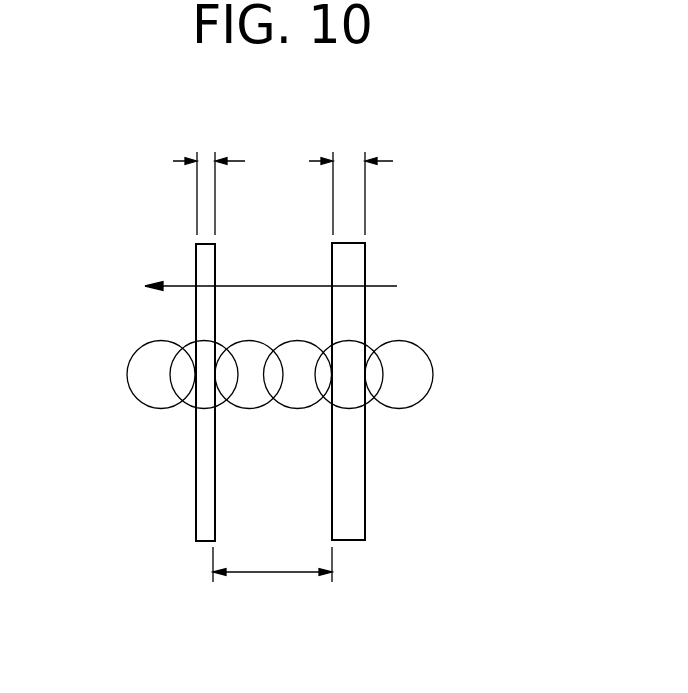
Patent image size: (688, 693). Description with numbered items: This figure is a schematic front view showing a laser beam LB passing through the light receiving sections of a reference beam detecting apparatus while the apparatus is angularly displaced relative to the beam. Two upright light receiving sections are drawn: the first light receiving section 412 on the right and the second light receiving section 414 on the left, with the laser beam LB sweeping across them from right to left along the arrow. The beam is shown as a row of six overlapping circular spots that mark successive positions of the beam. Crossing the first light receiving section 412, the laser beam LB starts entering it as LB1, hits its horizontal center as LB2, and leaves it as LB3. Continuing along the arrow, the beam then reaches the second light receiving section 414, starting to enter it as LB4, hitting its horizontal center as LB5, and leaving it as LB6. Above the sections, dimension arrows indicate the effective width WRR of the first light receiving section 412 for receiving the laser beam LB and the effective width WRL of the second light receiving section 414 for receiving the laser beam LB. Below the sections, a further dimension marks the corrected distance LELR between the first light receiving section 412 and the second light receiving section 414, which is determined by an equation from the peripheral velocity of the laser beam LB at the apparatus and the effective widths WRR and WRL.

The second light receiving section 414 is at (197, 275).
The first light receiving section 412 is at (352, 257).
The laser beam LB is at (272, 285).
The laser beam position entering first light receiving section LB1 is at (425, 396).
The laser beam position at horizontal center of first light receiving section LB2 is at (352, 409).
The laser beam position leaving first light receiving section LB3 is at (294, 409).
The laser beam position entering second light receiving section LB4 is at (247, 409).
The laser beam position at horizontal center of second light receiving section LB5 is at (187, 403).
The laser beam position leaving second light receiving section LB6 is at (128, 384).
The effective width of second light receiving section WRL is at (209, 174).
The effective width of first light receiving section WRR is at (351, 174).
The corrected distance between light receiving sections LELR is at (272, 582).